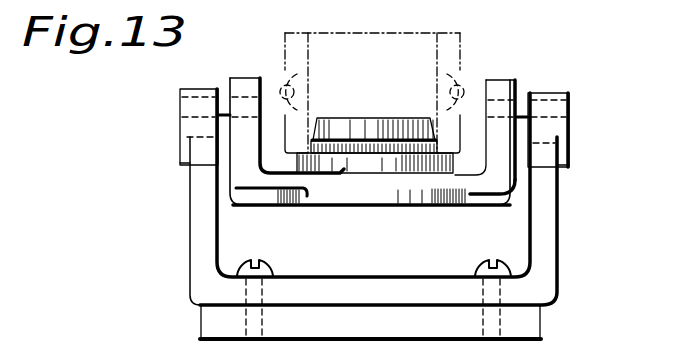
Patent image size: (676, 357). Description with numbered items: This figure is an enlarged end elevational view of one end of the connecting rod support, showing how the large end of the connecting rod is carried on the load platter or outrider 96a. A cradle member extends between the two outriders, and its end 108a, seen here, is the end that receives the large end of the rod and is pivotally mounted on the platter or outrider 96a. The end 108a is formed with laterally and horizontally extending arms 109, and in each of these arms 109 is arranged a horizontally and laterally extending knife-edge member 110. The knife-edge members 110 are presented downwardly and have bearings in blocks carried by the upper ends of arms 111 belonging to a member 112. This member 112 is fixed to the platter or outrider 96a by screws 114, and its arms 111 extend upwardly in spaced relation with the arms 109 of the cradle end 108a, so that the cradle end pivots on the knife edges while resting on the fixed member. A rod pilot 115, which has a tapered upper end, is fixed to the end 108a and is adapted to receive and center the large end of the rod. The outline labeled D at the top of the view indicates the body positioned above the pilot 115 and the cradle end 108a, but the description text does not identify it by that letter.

The die member D is at (366, 38).
The load platter or outrider 96a is at (527, 326).
The cradle end 108a is at (357, 193).
The arms 109 is at (242, 78).
The knife-edge member 110 is at (189, 103).
The arms 111 is at (196, 212).
The member 112 is at (367, 286).
The screws 114 is at (272, 262).
The rod pilot 115 is at (362, 128).